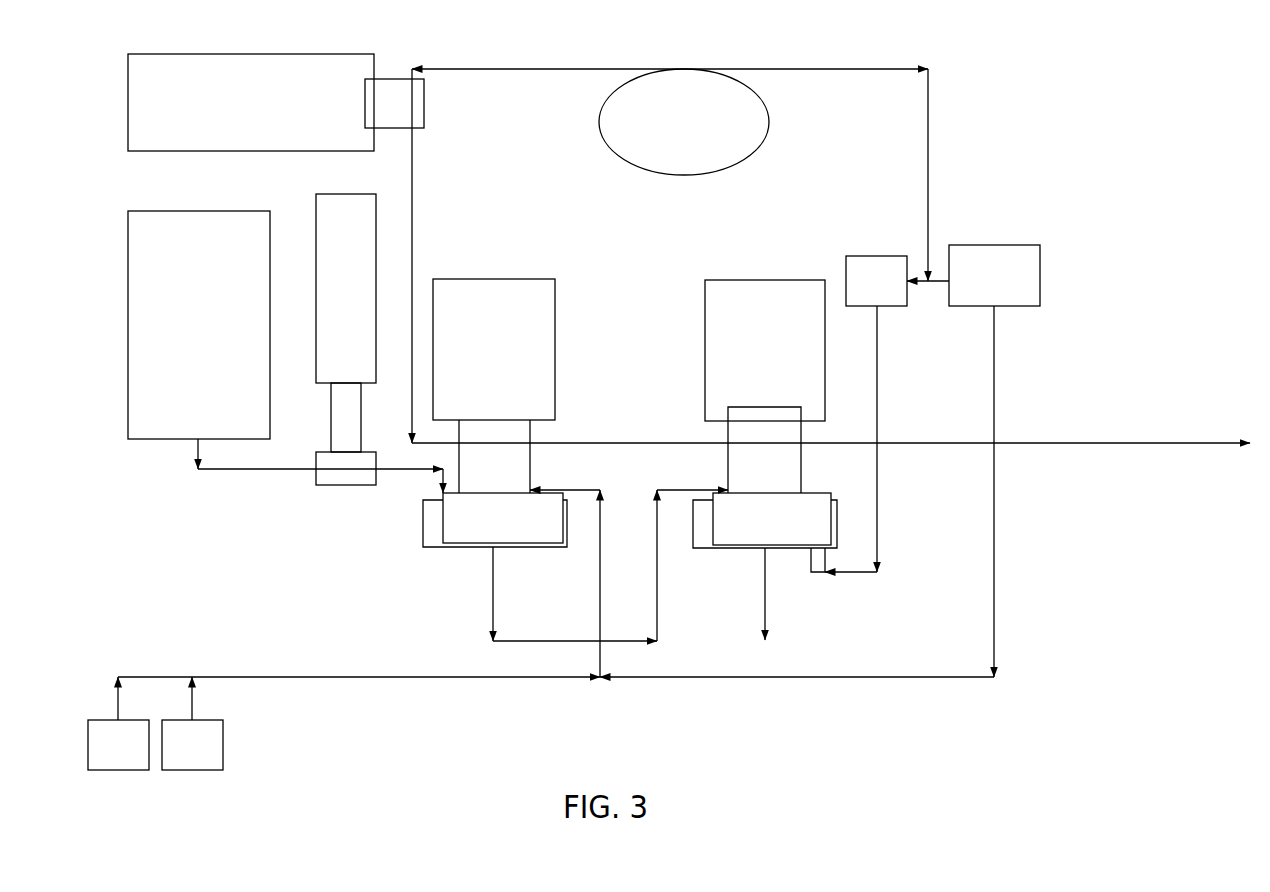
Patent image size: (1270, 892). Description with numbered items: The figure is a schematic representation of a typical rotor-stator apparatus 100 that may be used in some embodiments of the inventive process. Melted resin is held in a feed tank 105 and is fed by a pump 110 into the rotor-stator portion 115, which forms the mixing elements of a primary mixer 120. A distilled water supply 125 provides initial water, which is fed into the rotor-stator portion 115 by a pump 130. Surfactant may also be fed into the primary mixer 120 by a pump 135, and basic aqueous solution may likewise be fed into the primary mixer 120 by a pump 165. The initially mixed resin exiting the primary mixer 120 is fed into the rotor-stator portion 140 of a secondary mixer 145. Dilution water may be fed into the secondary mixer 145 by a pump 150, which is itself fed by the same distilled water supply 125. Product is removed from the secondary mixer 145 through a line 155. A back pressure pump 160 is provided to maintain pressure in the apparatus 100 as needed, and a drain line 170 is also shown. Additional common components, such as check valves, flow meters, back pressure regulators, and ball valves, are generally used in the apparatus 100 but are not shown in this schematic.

The rotor-stator apparatus 100 is at (1090, 111).
The feed tank 105 is at (216, 341).
The pump 110 is at (364, 304).
The rotor-stator portion 115 is at (518, 532).
The primary mixer 120 is at (511, 366).
The distilled water supply 125 is at (702, 136).
The pump 130 is at (1013, 289).
The pump 135 is at (210, 756).
The rotor-stator portion 140 is at (789, 534).
The secondary mixer 145 is at (781, 366).
The pump 150 is at (895, 296).
The line 155 is at (765, 595).
The back pressure pump 160 is at (269, 117).
The pump 165 is at (136, 756).
The drain line 170 is at (1157, 443).